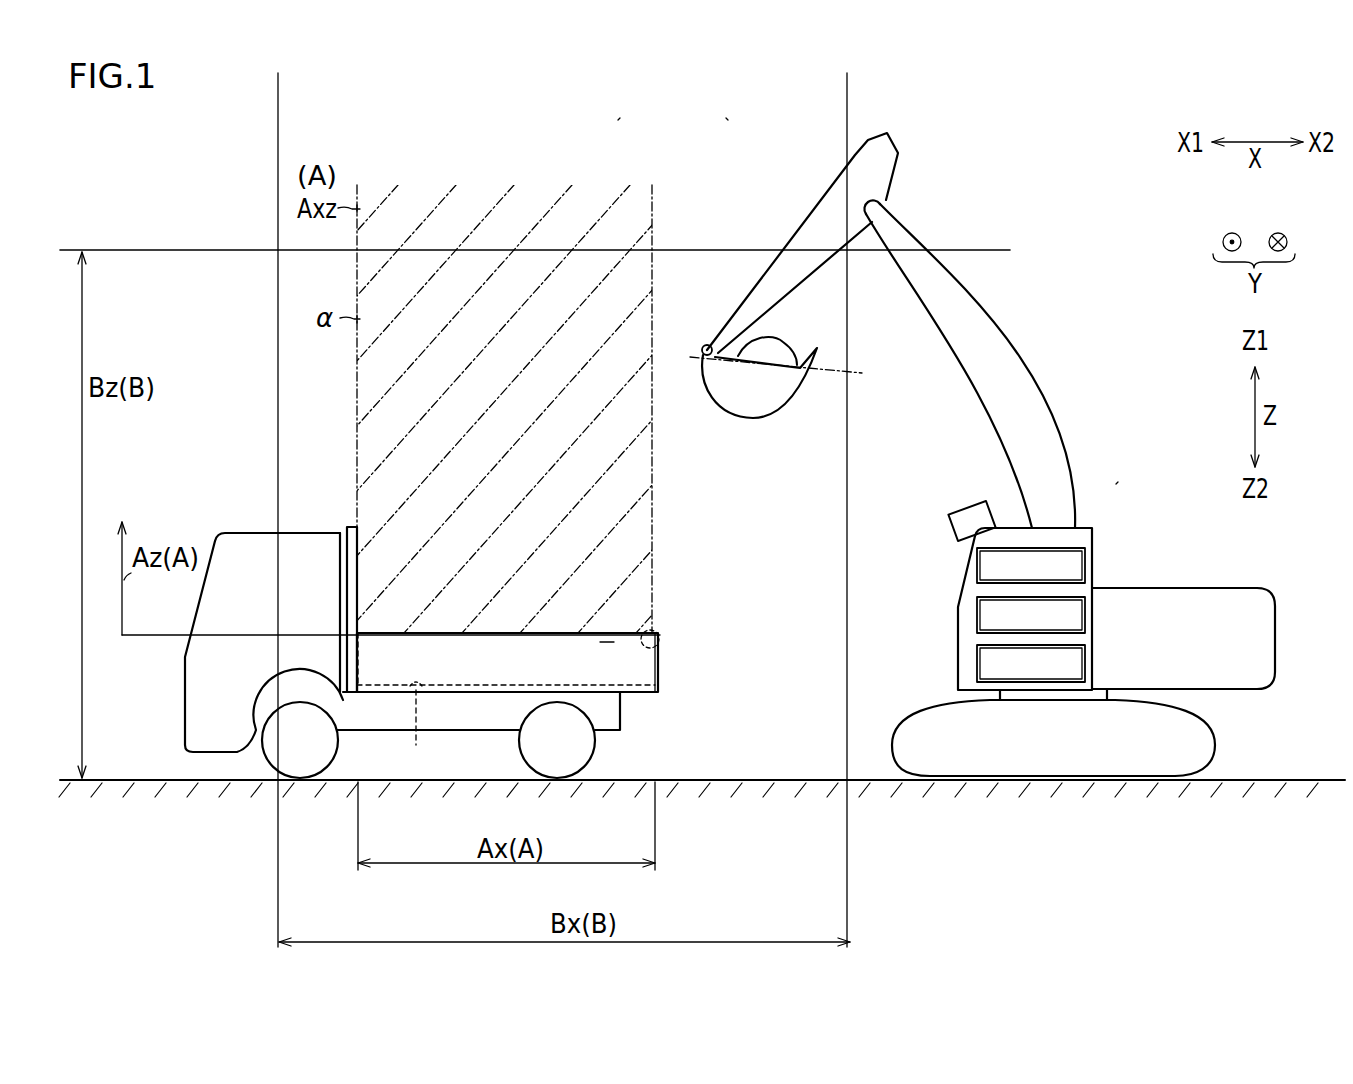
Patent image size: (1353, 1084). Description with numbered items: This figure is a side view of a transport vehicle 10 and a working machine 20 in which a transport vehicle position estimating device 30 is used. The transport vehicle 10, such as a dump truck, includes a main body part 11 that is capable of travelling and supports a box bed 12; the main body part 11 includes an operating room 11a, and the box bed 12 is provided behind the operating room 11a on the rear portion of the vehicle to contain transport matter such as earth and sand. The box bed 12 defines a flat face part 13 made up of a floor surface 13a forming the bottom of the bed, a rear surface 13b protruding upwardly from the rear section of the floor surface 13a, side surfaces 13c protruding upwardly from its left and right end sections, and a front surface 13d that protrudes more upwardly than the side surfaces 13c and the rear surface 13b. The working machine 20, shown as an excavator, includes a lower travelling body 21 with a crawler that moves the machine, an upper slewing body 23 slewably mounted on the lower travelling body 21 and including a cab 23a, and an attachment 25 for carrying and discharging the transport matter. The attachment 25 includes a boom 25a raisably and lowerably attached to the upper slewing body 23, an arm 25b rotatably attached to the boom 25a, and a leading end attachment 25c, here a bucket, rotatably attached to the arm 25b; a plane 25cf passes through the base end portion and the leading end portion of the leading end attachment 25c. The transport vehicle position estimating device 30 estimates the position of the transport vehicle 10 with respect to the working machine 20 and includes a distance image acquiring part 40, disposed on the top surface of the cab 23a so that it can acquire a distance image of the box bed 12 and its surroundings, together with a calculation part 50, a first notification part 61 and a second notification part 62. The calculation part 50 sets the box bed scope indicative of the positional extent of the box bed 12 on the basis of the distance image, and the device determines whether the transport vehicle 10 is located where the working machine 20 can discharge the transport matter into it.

The transport vehicle 10 is at (630, 114).
The working machine 20 is at (724, 107).
The main body part 11 is at (690, 758).
The operating room 11a is at (222, 532).
The box bed 12 is at (688, 681).
The flat face part 13 is at (528, 607).
The floor surface 13a is at (454, 729).
The rear surface 13b is at (652, 623).
The side surfaces 13c is at (607, 642).
The front surface 13d is at (356, 527).
The transport vehicle position estimating device 30 is at (1129, 478).
The lower travelling body 21 is at (1216, 740).
The upper slewing body 23 is at (1276, 640).
The cab 23a is at (1094, 545).
The attachment 25 is at (1098, 310).
The boom 25a is at (1052, 410).
The arm 25b is at (826, 196).
The leading end attachment 25c is at (752, 420).
The plane 25cf is at (857, 370).
The distance image acquiring part 40 is at (971, 501).
The calculation part 50 is at (1032, 678).
The first notification part 61 is at (1086, 568).
The second notification part 62 is at (1086, 617).